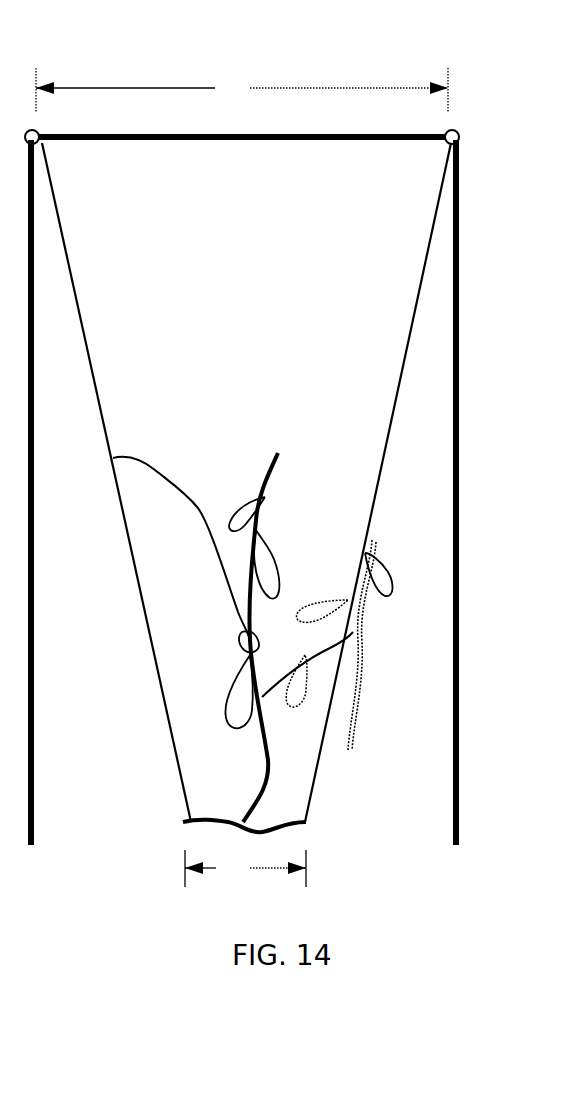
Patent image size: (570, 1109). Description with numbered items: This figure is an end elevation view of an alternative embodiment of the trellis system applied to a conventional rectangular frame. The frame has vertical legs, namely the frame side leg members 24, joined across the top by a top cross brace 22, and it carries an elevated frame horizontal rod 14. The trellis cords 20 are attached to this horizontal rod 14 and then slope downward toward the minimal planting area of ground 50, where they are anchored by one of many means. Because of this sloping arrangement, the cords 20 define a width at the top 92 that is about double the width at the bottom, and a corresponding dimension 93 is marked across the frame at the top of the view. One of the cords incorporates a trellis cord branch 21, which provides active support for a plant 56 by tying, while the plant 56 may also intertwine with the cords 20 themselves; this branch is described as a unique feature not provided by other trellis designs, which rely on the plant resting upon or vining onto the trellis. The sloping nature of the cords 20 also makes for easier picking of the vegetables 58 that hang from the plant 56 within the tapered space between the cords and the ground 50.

The frame horizontal rod 14 is at (458, 134).
The trellis cords 20 is at (393, 388).
The trellis cord branch 21 is at (158, 488).
The top cross brace 22 is at (306, 140).
The frame side leg member 24 is at (450, 478).
The ground 50 is at (190, 832).
The plant 56 is at (283, 462).
The vegetables 58 is at (362, 717).
The width at the top 92 is at (245, 869).
The top width 93 is at (242, 90).